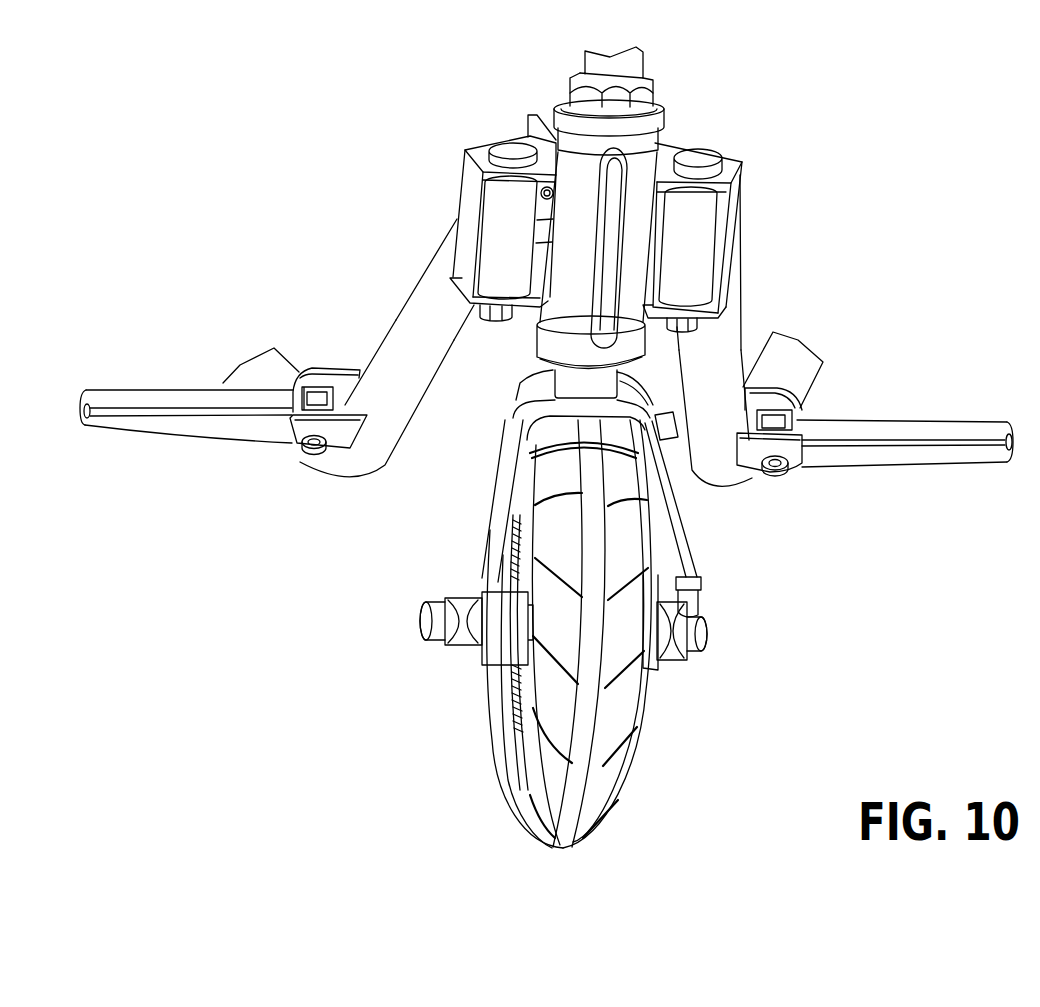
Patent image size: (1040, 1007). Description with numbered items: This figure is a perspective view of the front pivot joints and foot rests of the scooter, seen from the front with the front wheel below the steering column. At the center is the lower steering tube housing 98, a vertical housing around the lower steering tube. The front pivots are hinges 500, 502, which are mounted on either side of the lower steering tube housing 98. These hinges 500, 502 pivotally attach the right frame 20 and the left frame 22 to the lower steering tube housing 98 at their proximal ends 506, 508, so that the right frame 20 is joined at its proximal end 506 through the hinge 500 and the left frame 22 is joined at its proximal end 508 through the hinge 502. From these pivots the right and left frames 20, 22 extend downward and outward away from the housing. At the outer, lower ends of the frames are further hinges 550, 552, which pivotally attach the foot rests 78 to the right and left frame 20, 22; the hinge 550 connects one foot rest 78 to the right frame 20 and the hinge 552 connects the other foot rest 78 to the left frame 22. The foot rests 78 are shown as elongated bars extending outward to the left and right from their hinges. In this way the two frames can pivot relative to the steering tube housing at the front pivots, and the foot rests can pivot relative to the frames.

The right frame 20 is at (378, 425).
The left frame 22 is at (717, 453).
The foot rests 78 is at (155, 410).
The lower steering tube housing 98 is at (562, 317).
The hinge 500 is at (500, 208).
The hinge 502 is at (705, 233).
The proximal end 506 is at (455, 256).
The proximal end 508 is at (742, 277).
The hinge 550 is at (315, 450).
The hinge 552 is at (777, 472).